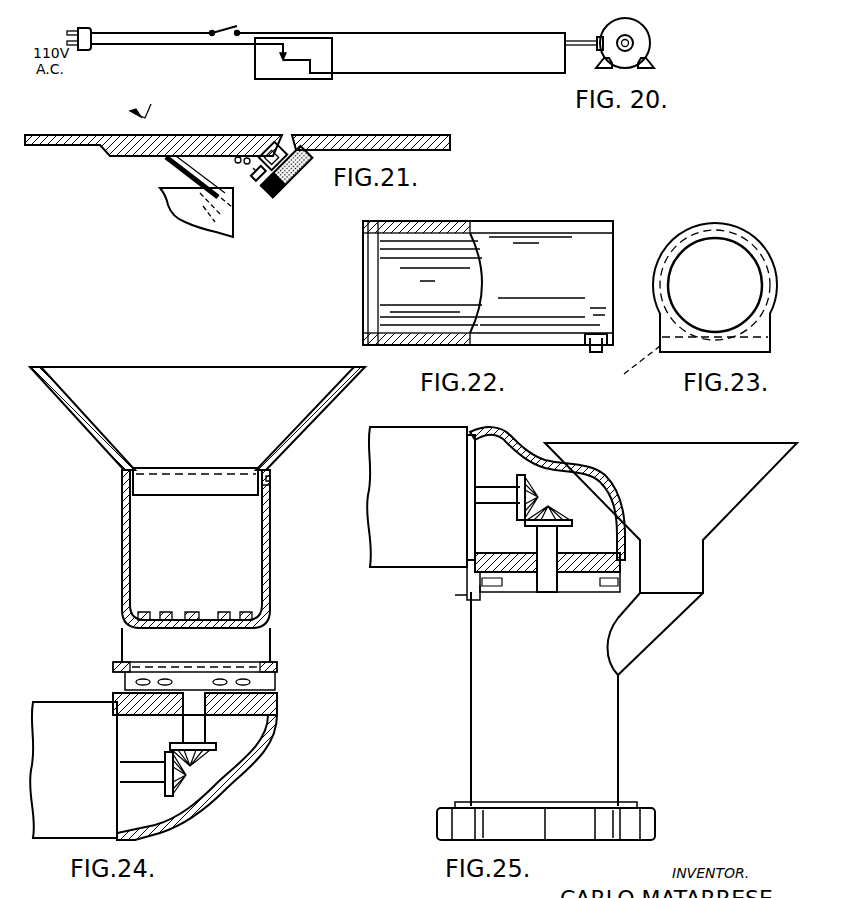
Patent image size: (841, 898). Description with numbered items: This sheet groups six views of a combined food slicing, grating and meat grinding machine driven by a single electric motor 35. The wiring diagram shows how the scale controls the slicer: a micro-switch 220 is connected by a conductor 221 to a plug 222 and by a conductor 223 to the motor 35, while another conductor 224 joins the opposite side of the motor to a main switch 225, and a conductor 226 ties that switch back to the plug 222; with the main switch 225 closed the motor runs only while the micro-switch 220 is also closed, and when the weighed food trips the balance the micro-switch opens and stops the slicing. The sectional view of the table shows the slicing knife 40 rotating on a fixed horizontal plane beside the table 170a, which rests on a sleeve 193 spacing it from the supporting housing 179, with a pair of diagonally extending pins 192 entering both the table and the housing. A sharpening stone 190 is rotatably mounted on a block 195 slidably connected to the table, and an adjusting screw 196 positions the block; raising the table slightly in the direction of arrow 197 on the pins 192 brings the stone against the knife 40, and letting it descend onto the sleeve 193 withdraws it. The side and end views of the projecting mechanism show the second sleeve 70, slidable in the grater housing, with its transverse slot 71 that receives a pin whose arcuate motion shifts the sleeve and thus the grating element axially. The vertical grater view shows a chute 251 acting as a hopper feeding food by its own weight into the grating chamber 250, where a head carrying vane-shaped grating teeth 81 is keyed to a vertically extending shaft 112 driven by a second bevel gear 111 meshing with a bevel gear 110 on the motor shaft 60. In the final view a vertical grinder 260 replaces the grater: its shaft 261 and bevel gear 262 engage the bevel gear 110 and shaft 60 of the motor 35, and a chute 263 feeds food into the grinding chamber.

In FIG. 20, the plug 222 is at (83, 27).
In FIG. 20, the conductor 226 is at (142, 33).
In FIG. 20, the conductor 221 is at (134, 48).
In FIG. 20, the main switch 225 is at (226, 28).
In FIG. 20, the micro-switch 220 is at (303, 80).
In FIG. 20, the conductor 224 is at (445, 32).
In FIG. 20, the conductor 223 is at (436, 77).
In FIG. 20, the electric motor 35 is at (650, 42).
In FIG. 24, the electric motor 35 is at (58, 718).
In FIG. 25, the electric motor 35 is at (408, 560).
In FIG. 21, the table 170a is at (227, 128).
In FIG. 21, the slicing knife 40 is at (370, 135).
In FIG. 21, the arrow 197 is at (156, 99).
In FIG. 21, the sleeve 193 is at (165, 170).
In FIG. 21, the diagonally extending pins 192 is at (196, 212).
In FIG. 21, the housing 179 is at (207, 228).
In FIG. 21, the block 195 is at (270, 148).
In FIG. 21, the adjusting screw 196 is at (262, 180).
In FIG. 21, the sharpening stone 190 is at (282, 186).
In FIG. 22, the second sleeve 70 is at (533, 231).
In FIG. 23, the second sleeve 70 is at (750, 240).
In FIG. 22, the transverse slot 71 is at (598, 354).
In FIG. 23, the transverse slot 71 is at (642, 360).
In FIG. 24, the chute 251 is at (92, 437).
In FIG. 24, the grating chamber 250 is at (270, 580).
In FIG. 24, the grating teeth 81 is at (238, 606).
In FIG. 24, the vertically extending shaft 112 is at (193, 733).
In FIG. 24, the second bevel gear 111 is at (210, 762).
In FIG. 24, the bevel gear 110 is at (176, 790).
In FIG. 25, the bevel gear 110 is at (529, 470).
In FIG. 24, the motor shaft 60 is at (140, 772).
In FIG. 25, the motor shaft 60 is at (498, 491).
In FIG. 25, the bevel gear 262 is at (565, 514).
In FIG. 25, the shaft 261 is at (547, 586).
In FIG. 25, the vertical grinder 260 is at (602, 753).
In FIG. 25, the chute 263 is at (726, 511).